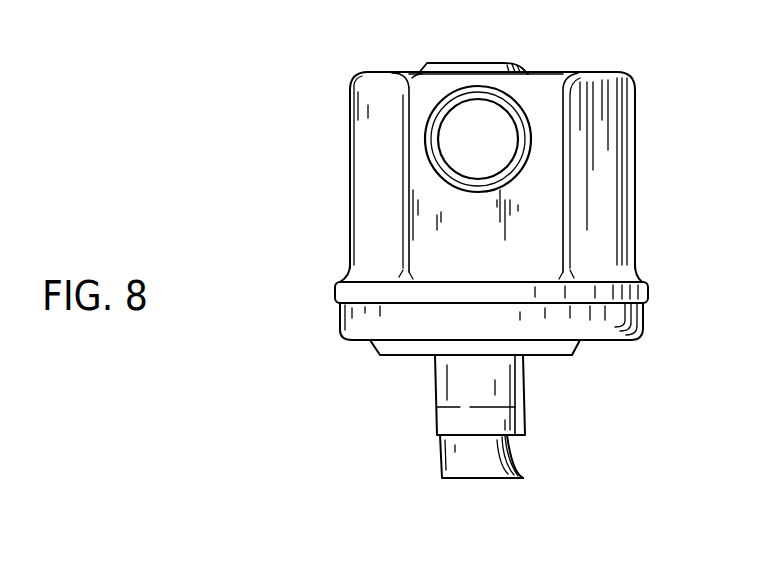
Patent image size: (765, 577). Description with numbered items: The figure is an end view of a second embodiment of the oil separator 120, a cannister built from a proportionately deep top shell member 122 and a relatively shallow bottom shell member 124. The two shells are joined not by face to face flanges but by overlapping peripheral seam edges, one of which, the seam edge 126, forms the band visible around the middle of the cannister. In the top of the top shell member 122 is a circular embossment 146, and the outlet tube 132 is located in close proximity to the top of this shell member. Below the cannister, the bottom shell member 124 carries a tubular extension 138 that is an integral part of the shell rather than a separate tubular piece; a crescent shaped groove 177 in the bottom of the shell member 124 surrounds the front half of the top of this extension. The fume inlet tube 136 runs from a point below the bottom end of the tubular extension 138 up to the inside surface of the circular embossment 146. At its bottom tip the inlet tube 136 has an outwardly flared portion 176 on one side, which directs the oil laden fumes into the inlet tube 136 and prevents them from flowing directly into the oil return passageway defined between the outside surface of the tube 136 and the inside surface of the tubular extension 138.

The oil separator embodiment 120 is at (333, 322).
The top shell member 122 is at (636, 203).
The bottom shell member 124 is at (648, 315).
The peripheral seam edge 126 is at (650, 291).
The outlet tube 132 is at (512, 177).
The fume inlet tube 136 is at (475, 480).
The tubular extension 138 is at (435, 391).
The circular embossment 146 is at (467, 63).
The outwardly flared portion 176 is at (522, 467).
The crescent shaped groove 177 is at (388, 357).